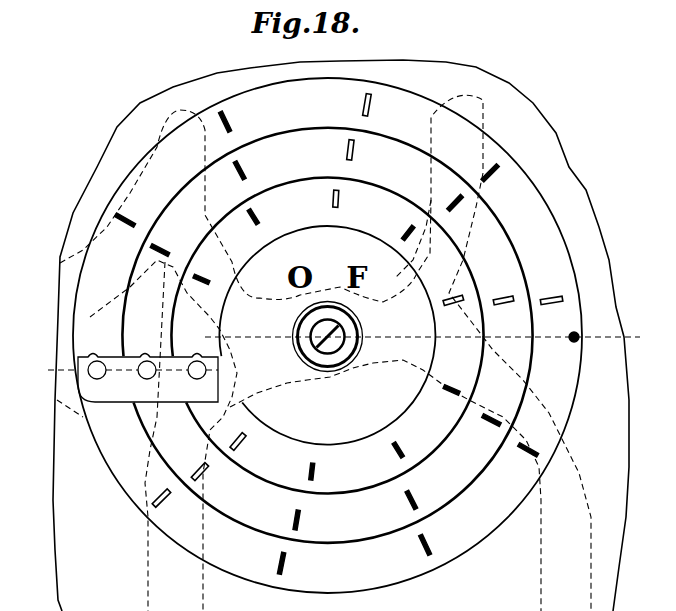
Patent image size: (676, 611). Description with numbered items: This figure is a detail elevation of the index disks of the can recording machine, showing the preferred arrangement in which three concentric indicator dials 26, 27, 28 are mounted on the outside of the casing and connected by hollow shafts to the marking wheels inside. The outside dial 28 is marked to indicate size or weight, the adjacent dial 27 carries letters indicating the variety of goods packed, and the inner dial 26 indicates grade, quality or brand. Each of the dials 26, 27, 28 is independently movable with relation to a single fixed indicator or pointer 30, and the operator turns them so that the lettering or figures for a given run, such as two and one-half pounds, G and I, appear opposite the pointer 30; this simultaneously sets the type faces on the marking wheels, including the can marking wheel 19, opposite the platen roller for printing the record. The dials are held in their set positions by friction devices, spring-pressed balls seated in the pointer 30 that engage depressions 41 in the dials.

The marking wheel 19 is at (343, 354).
The inner indicator dial 26 is at (331, 195).
The intermediate indicator dial 27 is at (346, 151).
The outside indicator dial 28 is at (356, 105).
The fixed indicator pointer 30 is at (96, 405).
The depressions 41 is at (164, 500).